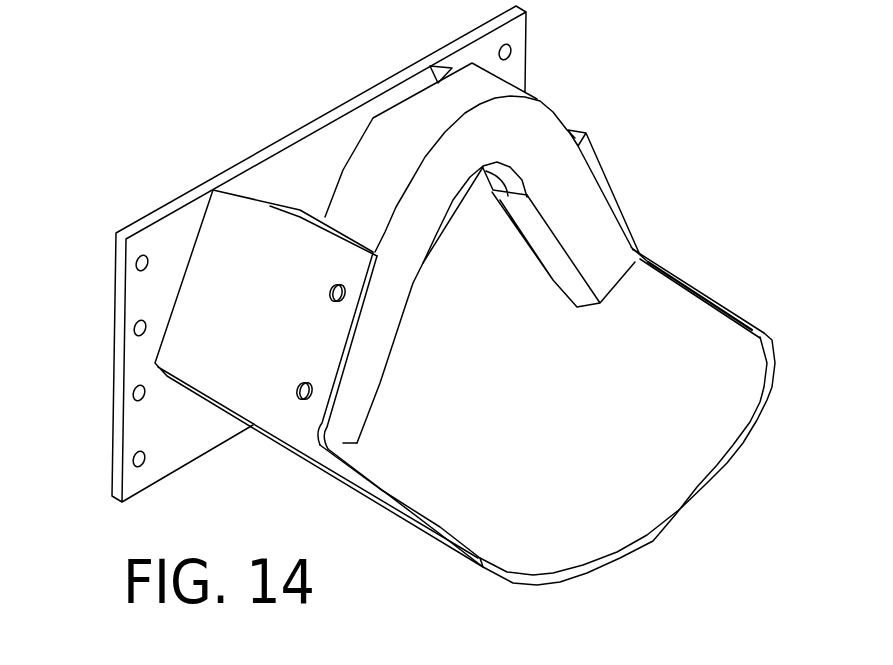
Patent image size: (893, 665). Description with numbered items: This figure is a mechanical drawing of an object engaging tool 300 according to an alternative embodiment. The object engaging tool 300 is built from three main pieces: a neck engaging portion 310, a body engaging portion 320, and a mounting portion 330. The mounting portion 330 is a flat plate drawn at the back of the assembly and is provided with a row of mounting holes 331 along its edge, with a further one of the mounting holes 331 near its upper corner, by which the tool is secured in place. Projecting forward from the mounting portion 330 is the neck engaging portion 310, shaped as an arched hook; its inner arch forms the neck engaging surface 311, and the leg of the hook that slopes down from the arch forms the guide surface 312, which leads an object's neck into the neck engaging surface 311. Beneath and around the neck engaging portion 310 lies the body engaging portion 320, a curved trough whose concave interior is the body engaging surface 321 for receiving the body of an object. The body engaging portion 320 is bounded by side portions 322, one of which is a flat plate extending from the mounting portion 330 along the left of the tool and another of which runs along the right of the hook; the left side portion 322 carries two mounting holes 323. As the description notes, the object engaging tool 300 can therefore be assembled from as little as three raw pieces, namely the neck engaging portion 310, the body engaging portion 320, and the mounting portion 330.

The object engaging tool 300 is at (757, 170).
The neck engaging portion 310 is at (530, 118).
The neck engaging surface 311 is at (492, 195).
The guide surface 312 is at (549, 279).
The body engaging portion 320 is at (655, 512).
The body engaging surface 321 is at (544, 468).
The side portions 322 is at (597, 152).
The mounting holes 323 is at (331, 292).
The mounting portion 330 is at (287, 135).
The mounting holes 331 is at (511, 48).